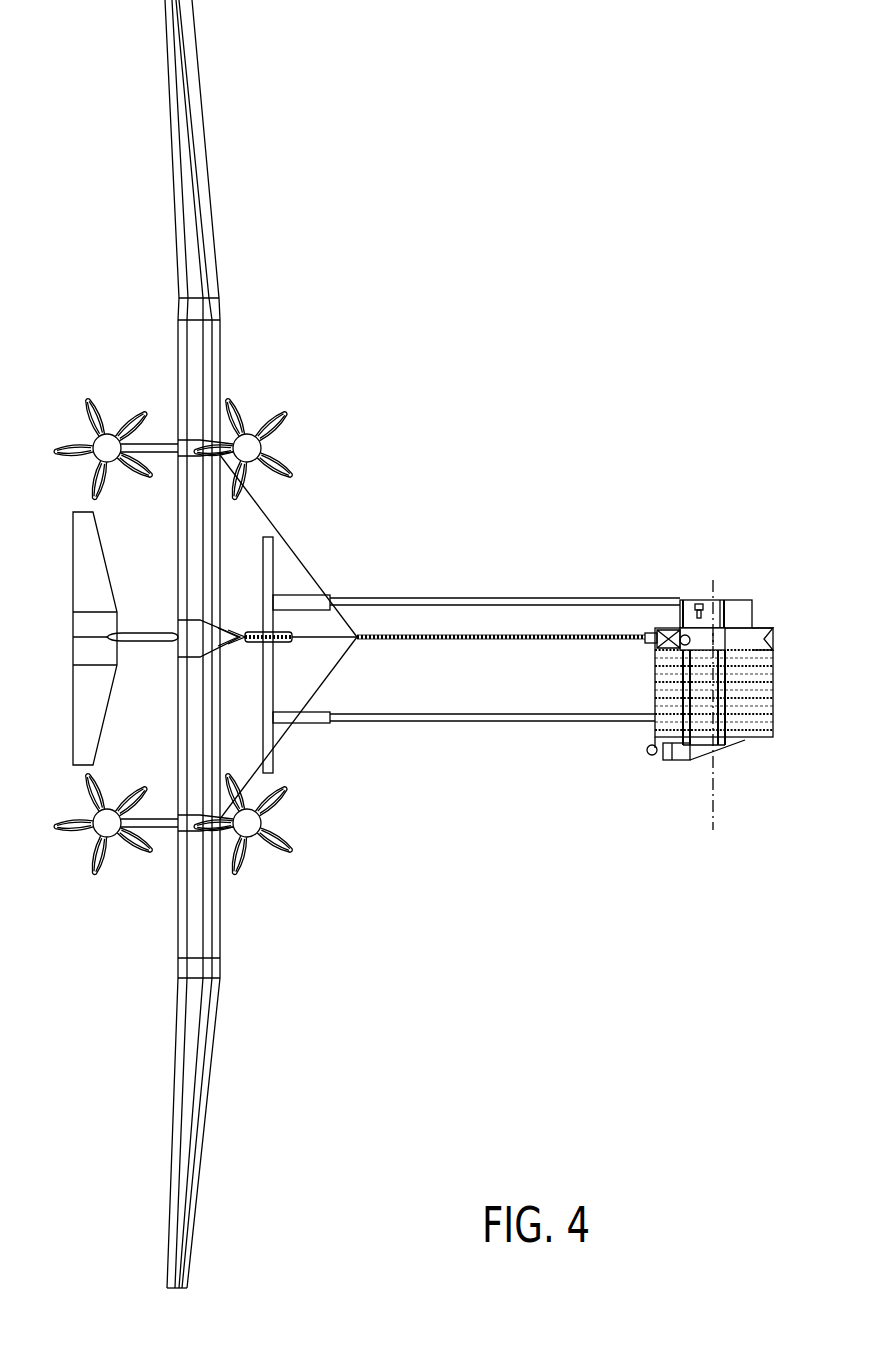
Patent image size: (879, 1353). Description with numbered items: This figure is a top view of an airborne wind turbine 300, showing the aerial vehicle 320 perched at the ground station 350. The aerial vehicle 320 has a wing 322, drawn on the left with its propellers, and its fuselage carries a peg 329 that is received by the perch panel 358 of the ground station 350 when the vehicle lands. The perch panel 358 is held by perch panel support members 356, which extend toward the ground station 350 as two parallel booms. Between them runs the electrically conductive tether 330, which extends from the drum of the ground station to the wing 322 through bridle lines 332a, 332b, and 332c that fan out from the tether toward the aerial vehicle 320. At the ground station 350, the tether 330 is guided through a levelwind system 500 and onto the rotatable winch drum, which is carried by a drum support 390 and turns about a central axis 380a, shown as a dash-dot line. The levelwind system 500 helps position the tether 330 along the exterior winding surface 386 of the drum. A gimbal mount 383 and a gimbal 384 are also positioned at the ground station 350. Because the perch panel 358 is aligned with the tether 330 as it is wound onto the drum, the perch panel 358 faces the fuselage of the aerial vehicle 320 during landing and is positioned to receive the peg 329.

The aerial vehicle 320 is at (126, 298).
The wing 322 is at (197, 282).
The airborne wind turbine 300 is at (473, 463).
The peg 329 is at (278, 636).
The perch panel 358 is at (270, 600).
The perch panel support members 356 is at (487, 598).
The bridle line 332c is at (268, 506).
The bridle line 332a is at (283, 733).
The bridle line 332b is at (330, 637).
The electrically conductive tether 330 is at (452, 640).
The ground station 350 is at (659, 550).
The drum support 390 is at (740, 598).
The exterior winding surface 386 is at (752, 717).
The levelwind system 500 is at (660, 600).
The gimbal mount 383 is at (690, 762).
The gimbal 384 is at (652, 757).
The axis 380a is at (658, 851).